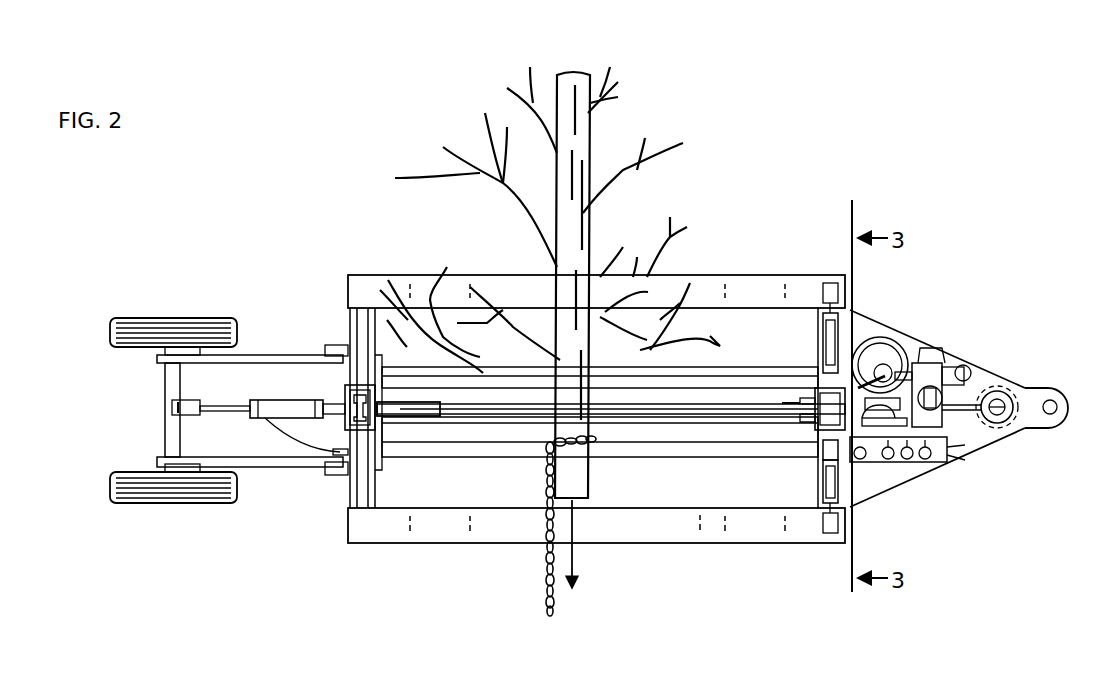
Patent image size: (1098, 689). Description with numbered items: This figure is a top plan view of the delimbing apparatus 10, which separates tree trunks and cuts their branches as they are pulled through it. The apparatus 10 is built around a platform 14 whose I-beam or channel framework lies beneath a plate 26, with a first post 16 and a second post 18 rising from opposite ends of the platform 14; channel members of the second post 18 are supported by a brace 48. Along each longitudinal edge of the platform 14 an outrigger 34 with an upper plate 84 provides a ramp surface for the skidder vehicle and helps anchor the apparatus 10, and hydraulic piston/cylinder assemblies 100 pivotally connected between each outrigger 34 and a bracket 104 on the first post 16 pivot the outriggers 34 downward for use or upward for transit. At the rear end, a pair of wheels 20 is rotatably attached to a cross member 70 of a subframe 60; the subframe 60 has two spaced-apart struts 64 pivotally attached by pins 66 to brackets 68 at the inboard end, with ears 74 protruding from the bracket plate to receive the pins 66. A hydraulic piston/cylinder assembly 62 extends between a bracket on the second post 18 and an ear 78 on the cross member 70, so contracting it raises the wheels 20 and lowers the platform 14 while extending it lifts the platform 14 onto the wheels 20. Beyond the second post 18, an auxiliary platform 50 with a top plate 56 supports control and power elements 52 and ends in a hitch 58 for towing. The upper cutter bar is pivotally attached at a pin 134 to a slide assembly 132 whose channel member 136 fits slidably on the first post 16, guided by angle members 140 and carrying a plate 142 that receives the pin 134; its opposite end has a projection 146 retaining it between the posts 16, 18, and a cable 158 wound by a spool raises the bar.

The apparatus for delimbing tree trunks 10 is at (690, 573).
The platform 14 is at (457, 490).
The first post 16 is at (816, 432).
The second post 18 is at (345, 396).
The wheels 20 is at (175, 503).
The plate 26 is at (512, 493).
The outrigger 34 is at (628, 545).
The brace 48 is at (376, 470).
The auxiliary platform 50 is at (998, 385).
The control and power elements 52 is at (908, 332).
The top plate 56 is at (980, 440).
The hitch 58 is at (1062, 391).
The subframe 60 is at (267, 470).
The hydraulic piston/cylinder assembly 62 is at (300, 400).
The struts 64 is at (305, 467).
The pins 66 is at (333, 452).
The brackets 68 is at (335, 478).
The cross member 70 is at (165, 423).
The ears 74 is at (347, 346).
The ear 78 is at (182, 403).
The upper plate 84 is at (716, 538).
The hydraulic piston/cylinder assemblies 100 is at (826, 484).
The bracket 104 is at (852, 458).
The slide assembly 132 is at (812, 440).
The pin 134 is at (803, 398).
The channel member 136 is at (806, 426).
The angle members 140 is at (815, 386).
The plate 142 is at (793, 402).
The projection 146 is at (390, 403).
The cable 158 is at (708, 412).